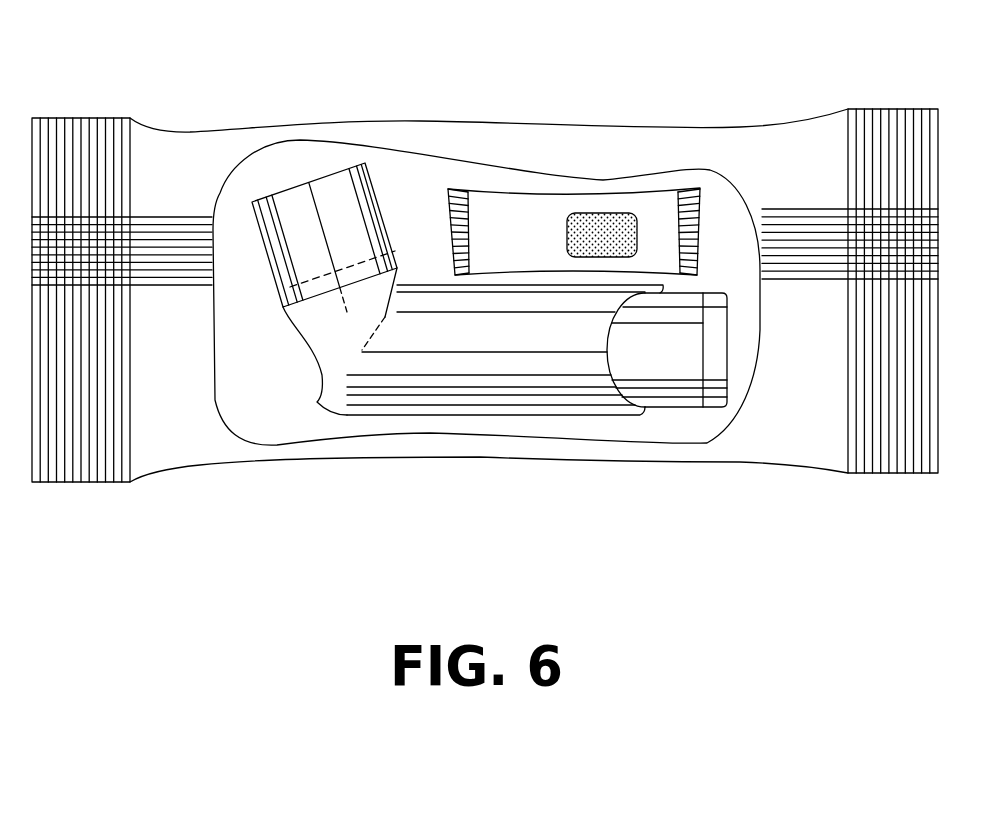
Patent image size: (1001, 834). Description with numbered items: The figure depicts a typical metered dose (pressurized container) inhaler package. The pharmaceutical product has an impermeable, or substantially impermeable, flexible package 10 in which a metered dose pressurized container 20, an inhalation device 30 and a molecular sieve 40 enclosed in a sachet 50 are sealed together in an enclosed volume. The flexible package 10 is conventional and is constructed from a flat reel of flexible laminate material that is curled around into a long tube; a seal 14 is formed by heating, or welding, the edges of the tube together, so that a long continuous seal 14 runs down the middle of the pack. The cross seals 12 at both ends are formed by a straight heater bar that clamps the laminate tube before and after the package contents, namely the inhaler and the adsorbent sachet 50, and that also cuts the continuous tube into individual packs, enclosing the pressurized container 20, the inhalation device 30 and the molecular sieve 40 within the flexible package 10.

The flexible package 10 is at (382, 140).
The cross seals 12 is at (55, 150).
The seal 14 is at (147, 240).
The metered dose pressurized container 20 is at (680, 363).
The inhalation device 30 is at (345, 378).
The molecular sieve 40 is at (597, 227).
The sachet 50 is at (475, 218).